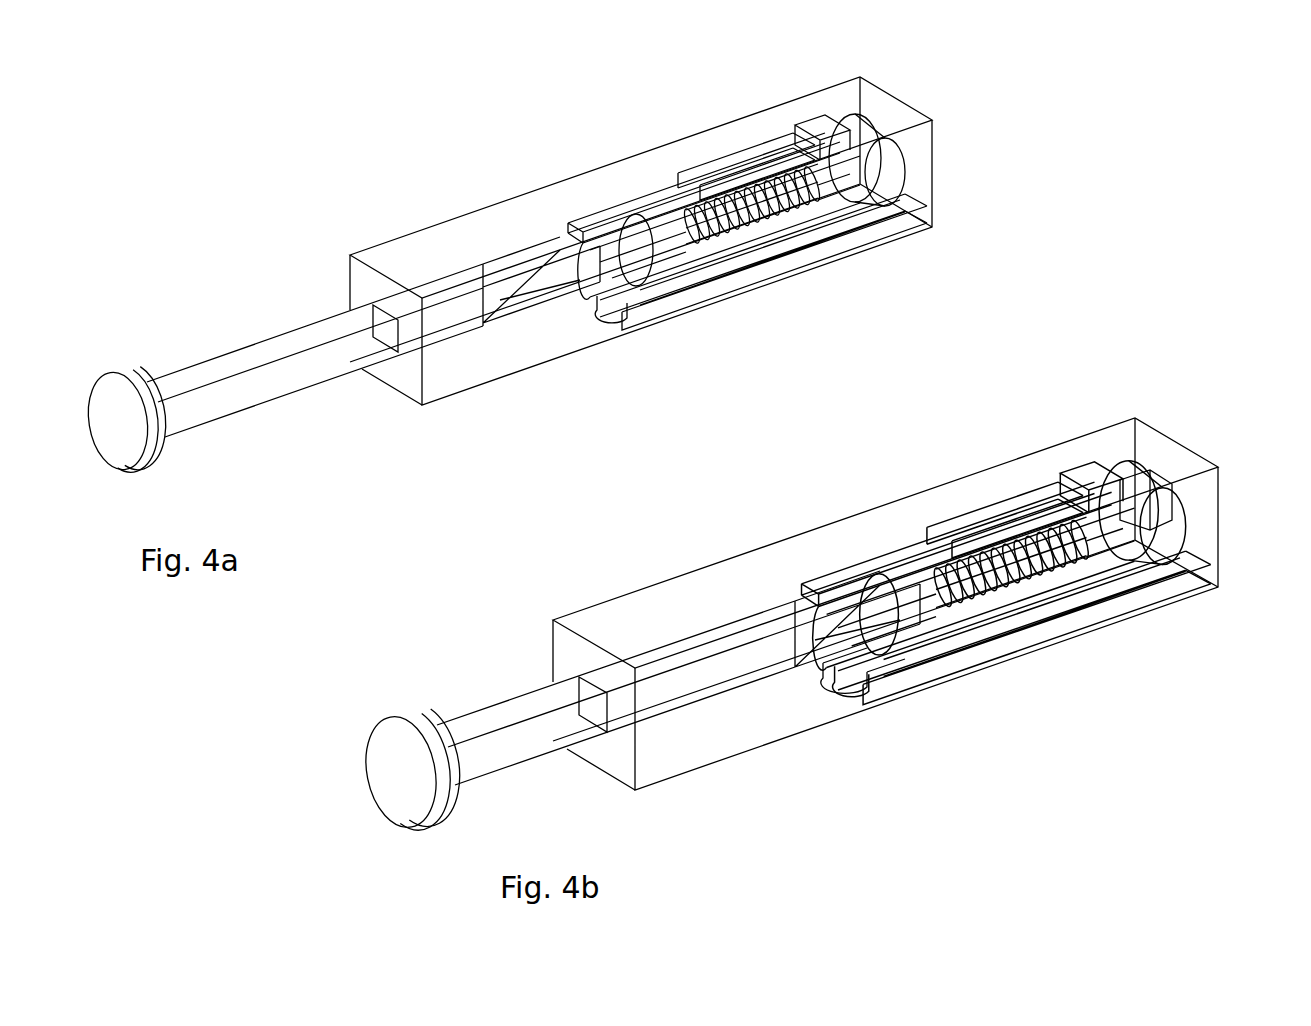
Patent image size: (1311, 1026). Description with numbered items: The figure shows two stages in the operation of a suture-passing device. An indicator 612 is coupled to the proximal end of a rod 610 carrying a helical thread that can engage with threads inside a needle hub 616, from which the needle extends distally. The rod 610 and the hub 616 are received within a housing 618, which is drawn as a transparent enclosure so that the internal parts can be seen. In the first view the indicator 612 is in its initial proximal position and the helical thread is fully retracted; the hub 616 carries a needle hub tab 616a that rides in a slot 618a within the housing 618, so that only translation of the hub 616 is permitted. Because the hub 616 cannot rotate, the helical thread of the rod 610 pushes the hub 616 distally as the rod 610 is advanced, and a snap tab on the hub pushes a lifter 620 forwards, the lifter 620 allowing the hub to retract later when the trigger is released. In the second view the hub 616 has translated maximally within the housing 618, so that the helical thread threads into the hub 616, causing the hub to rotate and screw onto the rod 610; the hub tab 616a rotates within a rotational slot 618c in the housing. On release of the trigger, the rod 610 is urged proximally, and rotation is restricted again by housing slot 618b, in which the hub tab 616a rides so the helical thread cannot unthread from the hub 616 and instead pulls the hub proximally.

In FIG. 4A, the rod 610 is at (292, 381).
In FIG. 4B, the rod 610 is at (553, 738).
In FIG. 4A, the indicator 612 is at (150, 433).
In FIG. 4B, the indicator 612 is at (407, 798).
In FIG. 4A, the needle hub 616 is at (683, 203).
In FIG. 4B, the needle hub 616 is at (970, 542).
In FIG. 4A, the needle hub tab 616a is at (755, 152).
In FIG. 4B, the needle hub tab 616a is at (1113, 468).
In FIG. 4A, the housing 618 is at (420, 236).
In FIG. 4B, the housing 618 is at (708, 590).
In FIG. 4A, the slot 618a is at (717, 163).
In FIG. 4B, the slot 618a is at (990, 507).
In FIG. 4B, the housing slot 618b is at (905, 630).
In FIG. 4B, the rotational slot 618c is at (1147, 507).
In FIG. 4A, the lifter 620 is at (783, 249).
In FIG. 4B, the lifter 620 is at (1055, 590).